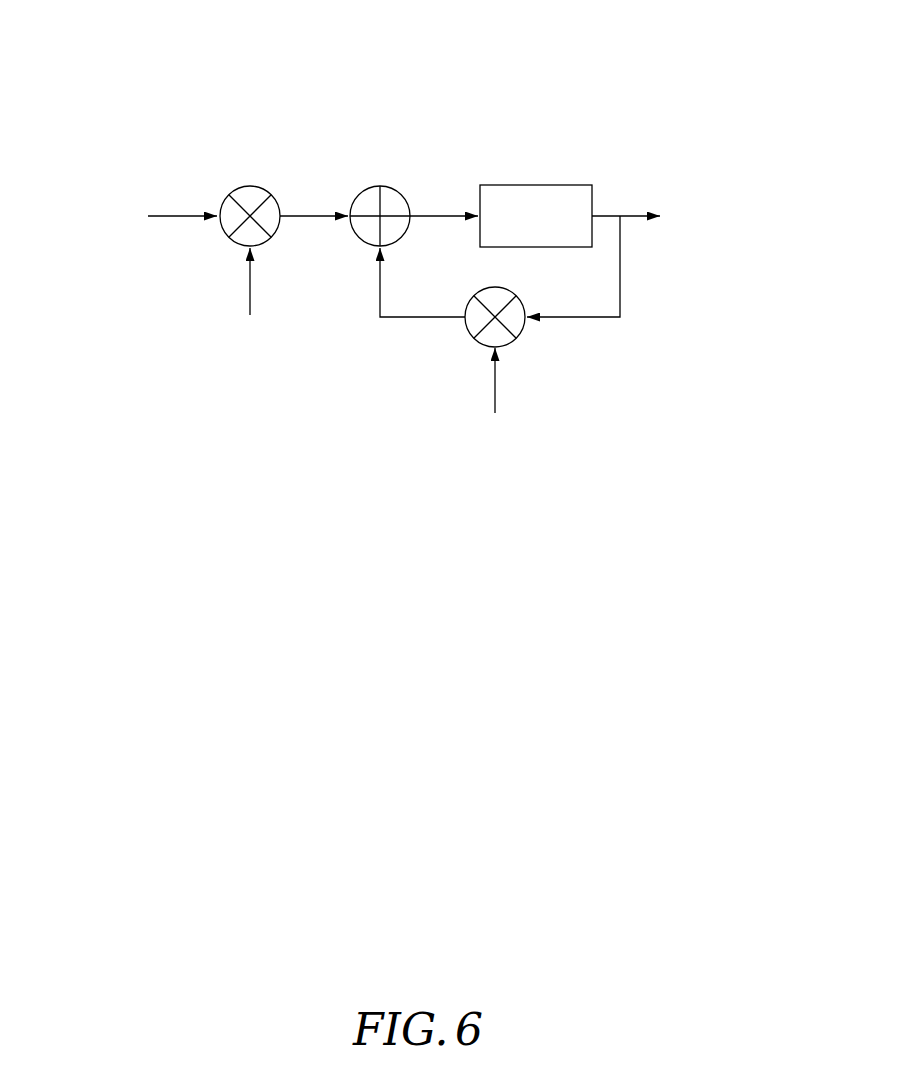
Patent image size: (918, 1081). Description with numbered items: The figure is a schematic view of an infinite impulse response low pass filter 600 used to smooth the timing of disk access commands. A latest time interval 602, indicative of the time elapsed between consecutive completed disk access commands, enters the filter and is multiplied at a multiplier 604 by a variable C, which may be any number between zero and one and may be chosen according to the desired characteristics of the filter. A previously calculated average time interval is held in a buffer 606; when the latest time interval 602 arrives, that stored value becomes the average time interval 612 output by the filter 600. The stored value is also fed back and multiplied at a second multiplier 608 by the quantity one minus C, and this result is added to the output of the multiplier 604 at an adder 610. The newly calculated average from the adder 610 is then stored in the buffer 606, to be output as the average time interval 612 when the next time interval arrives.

The infinite impulse response low pass filter 600 is at (532, 77).
The latest time interval 602 is at (88, 152).
The multiplier 604 is at (258, 186).
The buffer 606 is at (566, 185).
The multiplier 608 is at (522, 331).
The adder 610 is at (402, 192).
The average time interval 612 is at (728, 272).